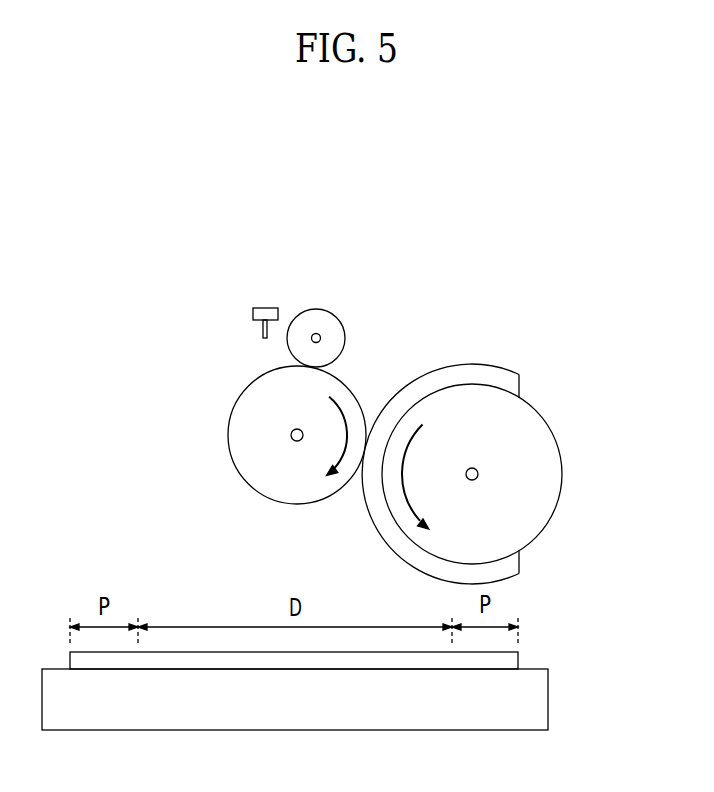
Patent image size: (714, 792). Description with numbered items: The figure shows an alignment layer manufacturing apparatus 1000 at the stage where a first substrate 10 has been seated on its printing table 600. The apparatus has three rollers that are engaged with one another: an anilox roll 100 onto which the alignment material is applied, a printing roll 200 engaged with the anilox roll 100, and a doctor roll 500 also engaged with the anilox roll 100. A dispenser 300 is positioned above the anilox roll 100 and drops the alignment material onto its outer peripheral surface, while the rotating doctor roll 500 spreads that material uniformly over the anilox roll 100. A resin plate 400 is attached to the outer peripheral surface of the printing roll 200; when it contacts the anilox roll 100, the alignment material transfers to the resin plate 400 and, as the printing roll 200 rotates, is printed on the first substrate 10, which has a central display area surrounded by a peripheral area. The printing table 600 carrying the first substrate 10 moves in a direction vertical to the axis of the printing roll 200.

The alignment layer manufacturing apparatus 1000 is at (452, 268).
The anilox roll 100 is at (228, 434).
The printing roll 200 is at (562, 470).
The dispenser 300 is at (263, 306).
The resin plate 400 is at (486, 363).
The doctor roll 500 is at (331, 312).
The first substrate 10 is at (523, 660).
The printing table 600 is at (548, 700).